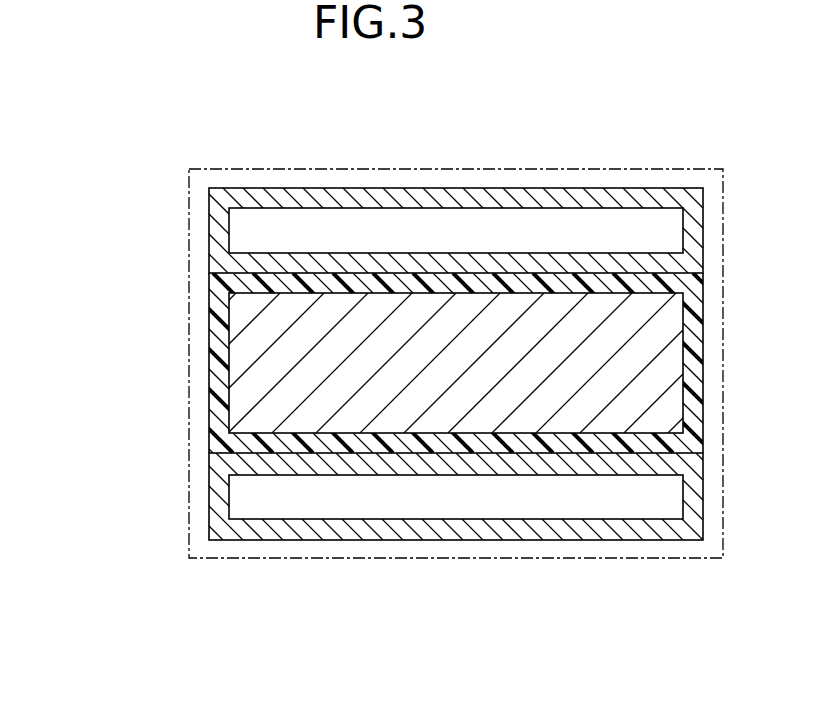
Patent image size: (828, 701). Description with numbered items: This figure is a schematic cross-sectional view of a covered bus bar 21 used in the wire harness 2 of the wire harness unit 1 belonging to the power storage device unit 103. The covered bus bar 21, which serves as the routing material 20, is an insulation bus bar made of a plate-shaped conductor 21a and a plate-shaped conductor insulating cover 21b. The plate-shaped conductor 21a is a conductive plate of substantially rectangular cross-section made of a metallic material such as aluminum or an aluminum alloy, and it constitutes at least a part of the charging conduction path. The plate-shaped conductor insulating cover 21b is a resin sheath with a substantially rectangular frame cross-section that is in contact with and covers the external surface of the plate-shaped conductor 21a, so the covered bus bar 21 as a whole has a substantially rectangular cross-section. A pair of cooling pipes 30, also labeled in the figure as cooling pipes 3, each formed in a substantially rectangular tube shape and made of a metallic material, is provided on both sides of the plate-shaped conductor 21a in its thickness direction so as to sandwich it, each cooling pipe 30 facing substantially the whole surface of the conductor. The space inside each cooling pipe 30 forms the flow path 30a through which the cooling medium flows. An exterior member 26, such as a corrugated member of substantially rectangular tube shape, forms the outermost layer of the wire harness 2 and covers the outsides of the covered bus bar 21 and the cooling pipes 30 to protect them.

The wire harness 2 is at (423, 360).
The wire harness unit 1 is at (423, 360).
The power storage device unit 103 is at (423, 360).
The exterior member 26 is at (661, 564).
The cooling pipe 30 is at (452, 369).
The external electrode 3 is at (452, 369).
The flow path 30a is at (412, 228).
The covered bus bar 21 is at (423, 363).
The routing material 20 is at (423, 363).
The plate-shaped conductor 21a is at (258, 375).
The plate-shaped conductor insulating cover 21b is at (222, 345).